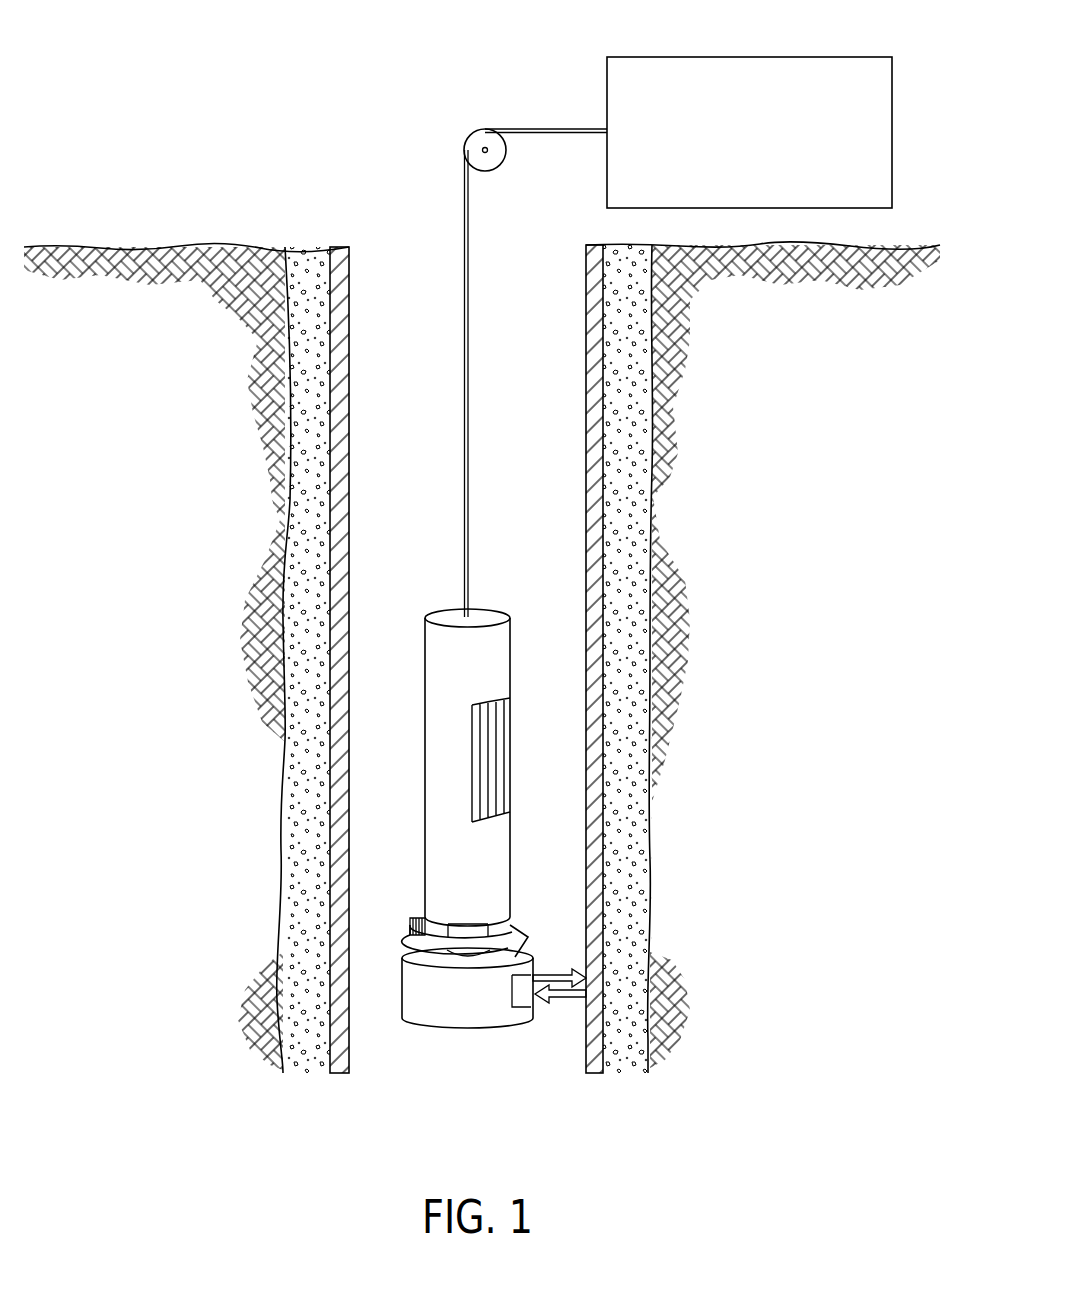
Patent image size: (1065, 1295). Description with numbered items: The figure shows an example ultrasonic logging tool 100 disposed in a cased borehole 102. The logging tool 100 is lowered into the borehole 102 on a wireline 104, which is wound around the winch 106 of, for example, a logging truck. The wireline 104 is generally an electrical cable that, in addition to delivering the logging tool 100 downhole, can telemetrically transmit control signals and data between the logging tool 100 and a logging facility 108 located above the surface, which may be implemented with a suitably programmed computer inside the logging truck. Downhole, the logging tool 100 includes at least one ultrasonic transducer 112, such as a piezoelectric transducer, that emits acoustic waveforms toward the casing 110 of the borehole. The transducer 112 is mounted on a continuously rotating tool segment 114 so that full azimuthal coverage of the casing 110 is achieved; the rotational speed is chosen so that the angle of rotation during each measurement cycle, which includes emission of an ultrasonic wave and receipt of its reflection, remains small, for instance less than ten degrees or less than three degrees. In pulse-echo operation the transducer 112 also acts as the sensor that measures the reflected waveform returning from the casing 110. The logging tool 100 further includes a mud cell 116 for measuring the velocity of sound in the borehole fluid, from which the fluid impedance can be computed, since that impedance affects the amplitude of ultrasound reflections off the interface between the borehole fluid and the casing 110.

The ultrasonic logging tool 100 is at (579, 852).
The cased borehole 102 is at (383, 230).
The wireline 104 is at (463, 182).
The winch 106 is at (483, 140).
The logging facility 108 is at (740, 57).
The casing 110 is at (602, 826).
The ultrasonic transducer 112 is at (525, 984).
The continuously rotating tool segment 114 is at (477, 1028).
The mud cell 116 is at (512, 735).